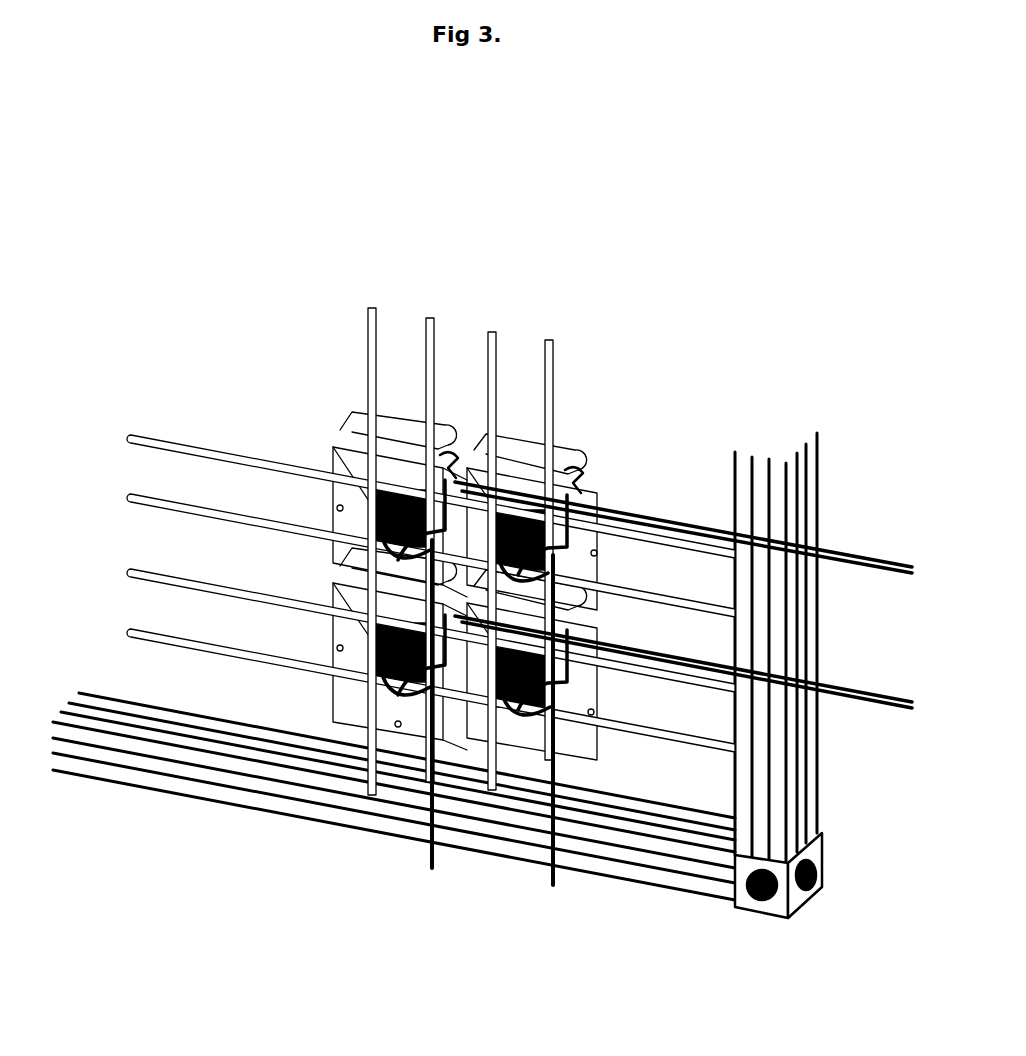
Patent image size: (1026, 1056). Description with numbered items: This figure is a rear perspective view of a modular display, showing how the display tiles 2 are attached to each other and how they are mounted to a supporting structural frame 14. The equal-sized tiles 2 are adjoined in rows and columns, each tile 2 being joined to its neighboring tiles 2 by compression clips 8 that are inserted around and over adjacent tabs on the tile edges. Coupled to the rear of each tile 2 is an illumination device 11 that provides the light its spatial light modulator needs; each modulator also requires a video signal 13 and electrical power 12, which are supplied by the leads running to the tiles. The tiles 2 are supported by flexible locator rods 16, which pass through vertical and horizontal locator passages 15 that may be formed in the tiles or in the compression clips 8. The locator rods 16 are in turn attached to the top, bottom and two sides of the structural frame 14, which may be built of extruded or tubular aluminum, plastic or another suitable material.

The display tile 2 is at (647, 496).
The compression clip 8 is at (523, 445).
The illumination device 11 is at (375, 510).
The electrical power 12 is at (540, 880).
The video signal input 13 is at (890, 580).
The structural frame 14 is at (193, 791).
The locator passage 15 is at (340, 650).
The locator rod 16 is at (257, 463).